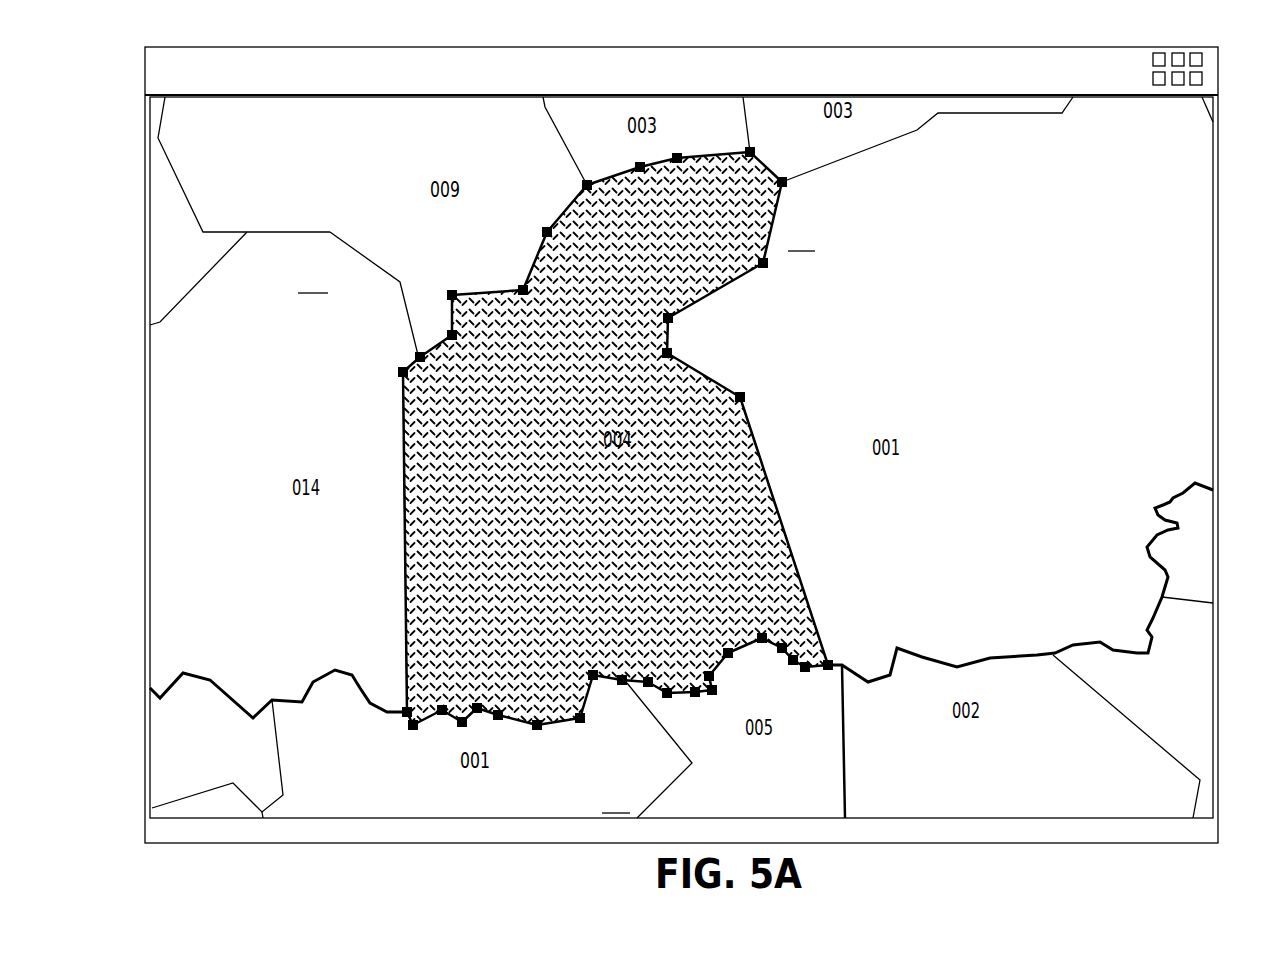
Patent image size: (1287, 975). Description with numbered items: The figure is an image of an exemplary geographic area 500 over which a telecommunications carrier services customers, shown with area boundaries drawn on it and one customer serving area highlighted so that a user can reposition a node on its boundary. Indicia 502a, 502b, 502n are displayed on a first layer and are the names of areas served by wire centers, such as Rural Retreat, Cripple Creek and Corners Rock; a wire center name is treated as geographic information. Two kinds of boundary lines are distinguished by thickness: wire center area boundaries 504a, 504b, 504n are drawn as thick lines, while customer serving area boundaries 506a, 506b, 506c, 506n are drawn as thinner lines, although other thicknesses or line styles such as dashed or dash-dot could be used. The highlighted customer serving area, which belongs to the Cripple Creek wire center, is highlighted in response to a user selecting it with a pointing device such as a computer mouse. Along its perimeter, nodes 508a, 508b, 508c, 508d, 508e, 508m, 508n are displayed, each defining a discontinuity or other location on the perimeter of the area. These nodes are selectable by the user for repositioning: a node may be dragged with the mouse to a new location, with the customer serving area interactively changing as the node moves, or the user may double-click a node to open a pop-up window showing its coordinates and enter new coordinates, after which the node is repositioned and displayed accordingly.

The geographic area 500 is at (1168, 157).
The indicia 502a is at (407, 238).
The indicia 502b is at (868, 215).
The indicia 502n is at (720, 765).
The wire center area boundary 504a is at (403, 533).
The wire center area boundary 504b is at (925, 657).
The wire center area boundary 504n is at (845, 747).
The customer serving area boundary 506a is at (780, 513).
The customer serving area boundary 506b is at (405, 288).
The customer serving area boundary 506c is at (547, 130).
The customer serving area boundary 506n is at (918, 128).
The node 508a is at (770, 268).
The node 508b is at (673, 321).
The node 508c is at (672, 353).
The node 508d is at (745, 390).
The node 508e is at (828, 662).
The node 508m is at (398, 373).
The node 508n is at (787, 180).